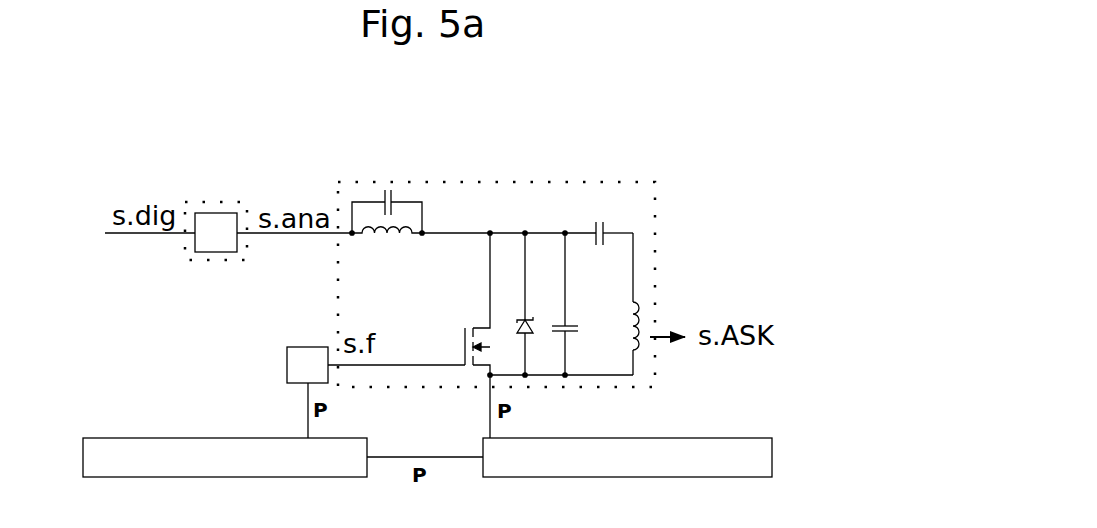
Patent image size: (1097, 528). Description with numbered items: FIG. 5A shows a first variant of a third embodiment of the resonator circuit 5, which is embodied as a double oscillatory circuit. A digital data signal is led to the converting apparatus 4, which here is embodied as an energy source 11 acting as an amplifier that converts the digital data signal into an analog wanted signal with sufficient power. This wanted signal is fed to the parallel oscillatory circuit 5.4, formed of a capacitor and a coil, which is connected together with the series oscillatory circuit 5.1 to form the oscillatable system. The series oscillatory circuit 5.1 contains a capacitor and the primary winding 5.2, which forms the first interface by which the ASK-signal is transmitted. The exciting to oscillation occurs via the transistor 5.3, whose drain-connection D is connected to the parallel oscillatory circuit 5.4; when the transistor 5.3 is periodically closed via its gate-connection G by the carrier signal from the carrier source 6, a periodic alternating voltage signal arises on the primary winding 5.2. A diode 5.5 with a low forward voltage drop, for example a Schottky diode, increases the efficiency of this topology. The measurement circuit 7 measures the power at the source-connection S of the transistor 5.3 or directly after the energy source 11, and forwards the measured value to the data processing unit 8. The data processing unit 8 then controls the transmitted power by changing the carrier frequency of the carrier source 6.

The energy source 11 is at (207, 233).
The converting apparatus 4 is at (203, 275).
The resonator circuit 5 is at (670, 210).
The parallel oscillatory circuit 5.4 is at (438, 205).
The series oscillatory circuit 5.1 is at (642, 218).
The primary winding 5.2 is at (645, 308).
The diode 5.5 is at (535, 342).
The transistor 5.3 is at (467, 375).
The carrier source 6 is at (287, 365).
The measurement circuit 7 is at (627, 426).
The data processing unit 8 is at (283, 457).